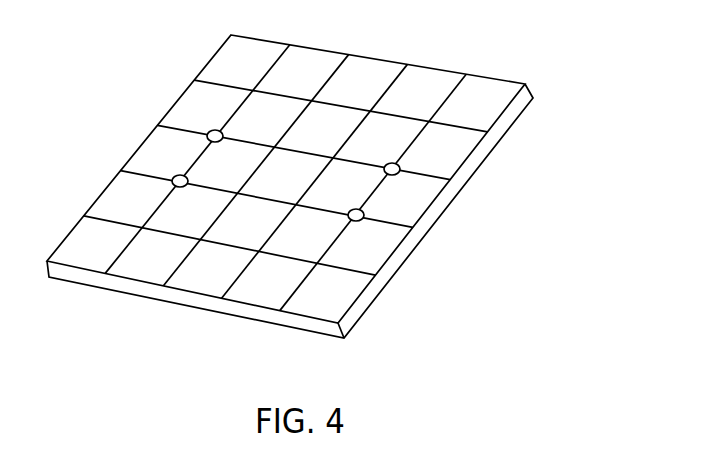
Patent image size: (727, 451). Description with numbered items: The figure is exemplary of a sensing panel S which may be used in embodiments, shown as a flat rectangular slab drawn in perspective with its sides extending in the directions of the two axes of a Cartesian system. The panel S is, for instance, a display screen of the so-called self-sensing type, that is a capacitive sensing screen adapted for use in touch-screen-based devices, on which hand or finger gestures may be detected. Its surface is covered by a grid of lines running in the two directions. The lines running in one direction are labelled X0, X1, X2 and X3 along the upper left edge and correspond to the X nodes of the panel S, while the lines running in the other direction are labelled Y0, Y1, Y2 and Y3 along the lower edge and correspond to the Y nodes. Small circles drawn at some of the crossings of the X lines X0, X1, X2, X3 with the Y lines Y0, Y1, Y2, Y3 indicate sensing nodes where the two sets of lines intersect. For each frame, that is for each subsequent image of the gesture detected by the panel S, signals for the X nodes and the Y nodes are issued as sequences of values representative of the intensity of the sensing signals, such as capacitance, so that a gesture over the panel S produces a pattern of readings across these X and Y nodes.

The sensing panel S is at (362, 205).
The sensing line X0 is at (203, 234).
The sensing line X1 is at (247, 182).
The sensing line X2 is at (283, 136).
The sensing line X3 is at (323, 88).
The sensing line Y0 is at (176, 186).
The sensing line Y1 is at (242, 196).
The sensing line Y2 is at (307, 214).
The sensing line Y3 is at (373, 224).